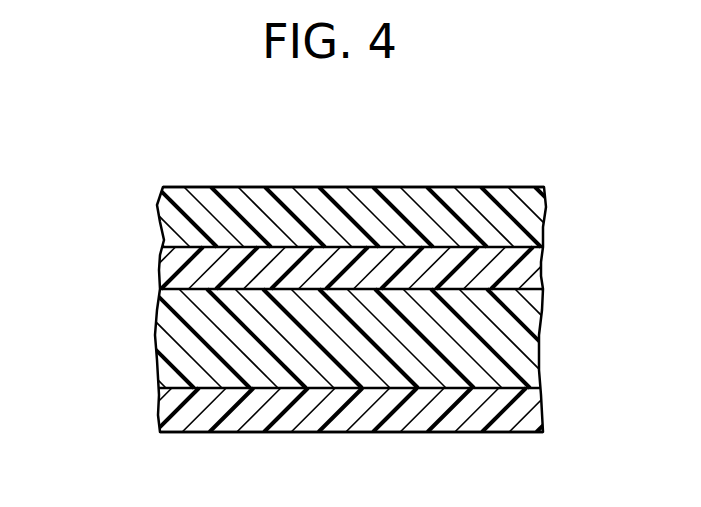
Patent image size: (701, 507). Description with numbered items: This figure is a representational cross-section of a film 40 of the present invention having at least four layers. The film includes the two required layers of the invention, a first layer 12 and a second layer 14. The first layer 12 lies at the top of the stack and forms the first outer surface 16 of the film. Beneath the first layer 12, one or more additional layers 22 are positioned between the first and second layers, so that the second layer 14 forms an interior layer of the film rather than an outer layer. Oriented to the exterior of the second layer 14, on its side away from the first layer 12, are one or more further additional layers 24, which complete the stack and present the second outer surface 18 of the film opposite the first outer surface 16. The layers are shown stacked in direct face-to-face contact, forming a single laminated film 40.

The film 40 is at (116, 236).
The first layer 12 is at (445, 197).
The first outer surface 16 is at (284, 187).
The additional layers 22 is at (529, 269).
The second layer 14 is at (535, 329).
The additional layers 24 is at (527, 407).
The second outer surface 18 is at (240, 432).